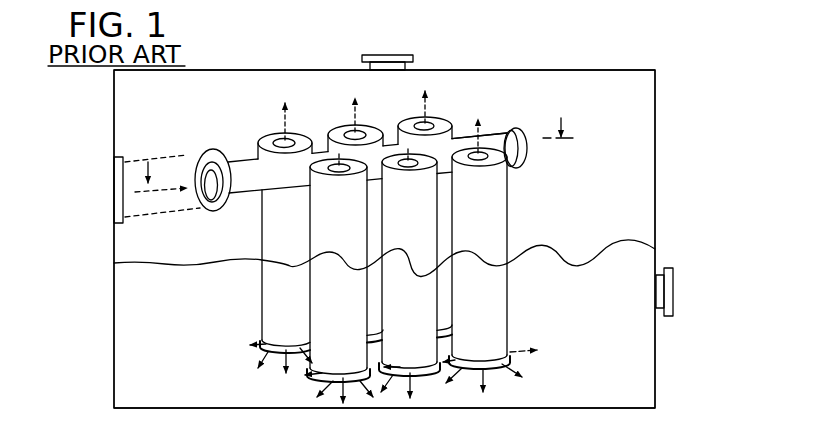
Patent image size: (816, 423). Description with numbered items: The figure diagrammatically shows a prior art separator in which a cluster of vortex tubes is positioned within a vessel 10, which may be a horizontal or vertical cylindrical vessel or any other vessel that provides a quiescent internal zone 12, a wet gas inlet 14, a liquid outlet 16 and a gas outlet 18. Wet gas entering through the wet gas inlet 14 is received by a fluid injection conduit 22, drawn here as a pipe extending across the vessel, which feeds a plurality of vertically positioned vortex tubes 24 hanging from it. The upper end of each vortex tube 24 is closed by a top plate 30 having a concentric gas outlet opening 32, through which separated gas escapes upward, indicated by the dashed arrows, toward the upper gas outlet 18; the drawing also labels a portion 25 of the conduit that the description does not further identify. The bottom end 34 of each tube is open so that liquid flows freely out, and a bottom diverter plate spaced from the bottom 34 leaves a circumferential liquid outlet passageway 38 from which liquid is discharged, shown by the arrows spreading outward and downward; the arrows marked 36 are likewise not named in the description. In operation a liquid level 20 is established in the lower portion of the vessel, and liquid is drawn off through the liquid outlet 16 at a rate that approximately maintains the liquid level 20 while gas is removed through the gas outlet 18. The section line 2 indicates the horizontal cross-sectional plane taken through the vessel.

The vessel 10 is at (657, 192).
The quiescent internal zone 12 is at (632, 201).
The wet gas inlet 14 is at (112, 180).
The liquid outlet 16 is at (673, 282).
The gas outlet 18 is at (397, 55).
The liquid level 20 is at (166, 263).
The fluid injection conduit 22 is at (250, 158).
The vortex tubes 24 is at (258, 157).
The pipe end portion 25 is at (455, 132).
The top plate 30 is at (297, 133).
The gas outlet opening 32 is at (282, 137).
The bottom end 34 is at (272, 343).
The downward flow arrows 36 is at (328, 383).
The circumferential liquid outlet passageway 38 is at (283, 353).
The section line 2 is at (355, 163).